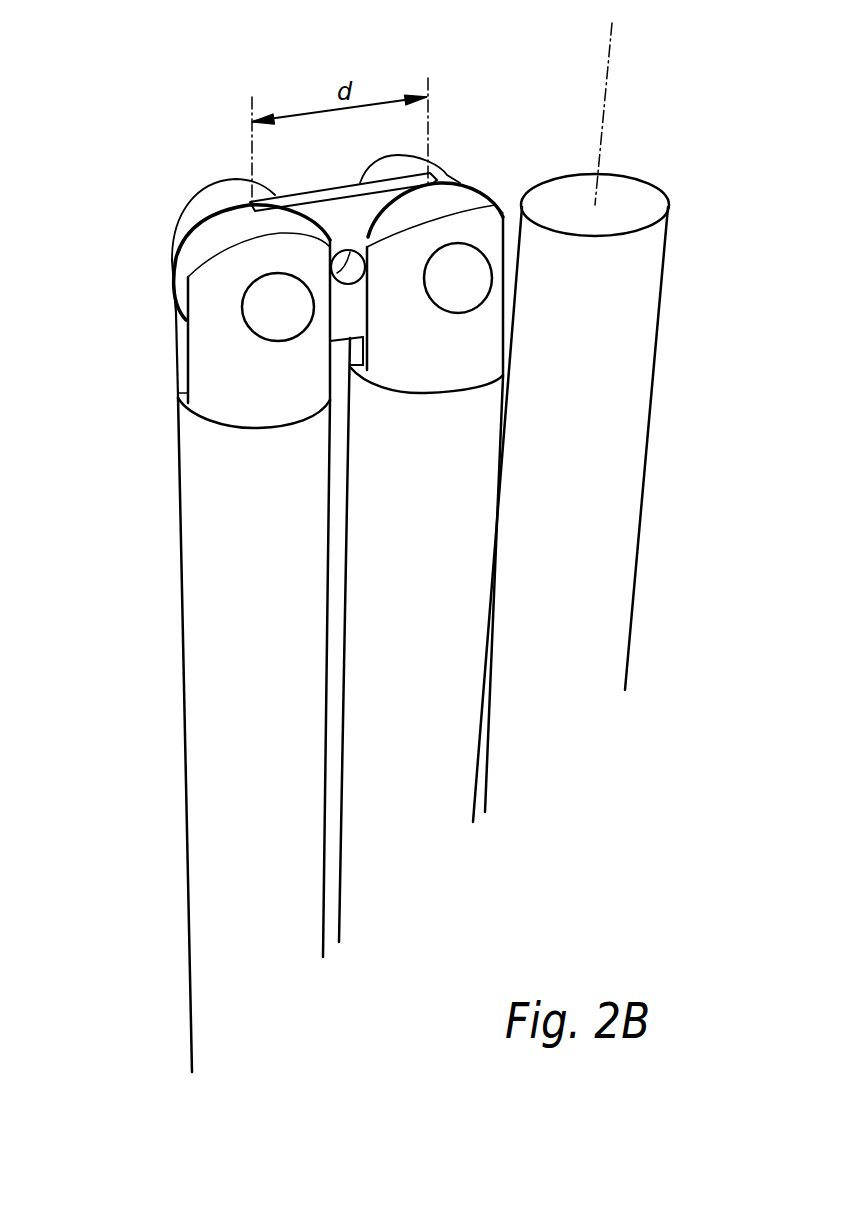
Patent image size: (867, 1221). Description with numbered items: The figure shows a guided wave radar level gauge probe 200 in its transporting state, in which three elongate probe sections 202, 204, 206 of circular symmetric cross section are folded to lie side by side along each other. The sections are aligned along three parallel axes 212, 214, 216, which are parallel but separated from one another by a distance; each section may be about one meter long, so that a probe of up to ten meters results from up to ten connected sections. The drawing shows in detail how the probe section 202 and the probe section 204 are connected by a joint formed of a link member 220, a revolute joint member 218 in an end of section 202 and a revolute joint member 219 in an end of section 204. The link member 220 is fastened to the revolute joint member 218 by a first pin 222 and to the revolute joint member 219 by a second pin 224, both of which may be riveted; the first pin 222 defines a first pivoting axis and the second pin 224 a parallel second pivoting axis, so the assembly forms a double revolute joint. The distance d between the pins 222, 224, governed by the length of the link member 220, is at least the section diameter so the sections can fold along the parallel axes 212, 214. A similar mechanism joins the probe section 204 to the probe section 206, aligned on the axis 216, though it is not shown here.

The probe 200 is at (694, 382).
The probe section 202 is at (209, 515).
The probe section 204 is at (380, 570).
The probe section 206 is at (602, 448).
The axis 212 is at (251, 154).
The axis 214 is at (428, 140).
The axis 216 is at (608, 87).
The revolute joint member 218 is at (232, 402).
The revolute joint member 219 is at (400, 380).
The link member 220 is at (337, 190).
The first pin 222 is at (266, 311).
The second pin 224 is at (445, 275).